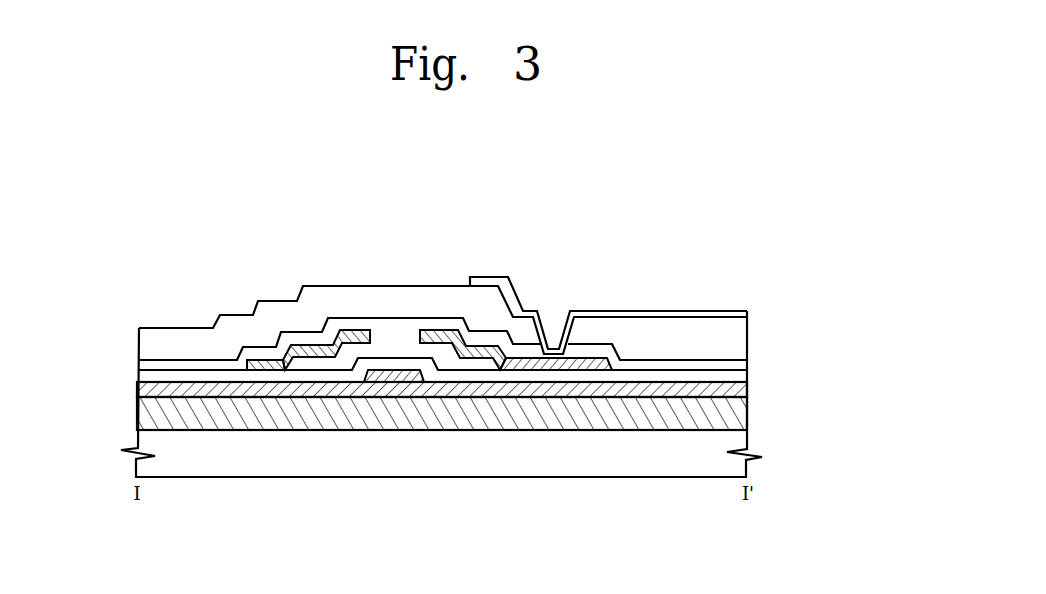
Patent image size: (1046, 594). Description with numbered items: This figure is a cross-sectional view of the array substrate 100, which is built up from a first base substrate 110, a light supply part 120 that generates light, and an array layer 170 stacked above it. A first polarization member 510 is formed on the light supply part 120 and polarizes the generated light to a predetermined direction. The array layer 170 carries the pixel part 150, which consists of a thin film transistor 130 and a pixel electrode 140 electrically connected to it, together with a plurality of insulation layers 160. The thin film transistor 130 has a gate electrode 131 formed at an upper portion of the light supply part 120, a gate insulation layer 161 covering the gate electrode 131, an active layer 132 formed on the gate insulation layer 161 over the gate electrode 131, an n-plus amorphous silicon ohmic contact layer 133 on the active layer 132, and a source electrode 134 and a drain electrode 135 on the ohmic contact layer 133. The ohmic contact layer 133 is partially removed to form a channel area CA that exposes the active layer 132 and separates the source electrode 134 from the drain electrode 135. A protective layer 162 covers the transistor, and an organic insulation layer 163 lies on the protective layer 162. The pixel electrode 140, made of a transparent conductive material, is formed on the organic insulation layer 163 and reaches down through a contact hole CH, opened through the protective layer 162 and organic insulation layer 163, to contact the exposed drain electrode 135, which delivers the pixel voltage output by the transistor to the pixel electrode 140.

The array substrate 100 is at (704, 141).
The first base substrate 110 is at (737, 441).
The light supply part 120 is at (735, 418).
The first polarization member 510 is at (742, 392).
The thin film transistor 130 is at (438, 318).
The gate electrode 131 is at (392, 383).
The active layer 132 is at (456, 366).
The ohmic contact layer 133 is at (318, 358).
The source electrode 134 is at (277, 371).
The drain electrode 135 is at (532, 371).
The pixel electrode 140 is at (519, 290).
The pixel part 150 is at (431, 209).
The insulation layers 160 is at (324, 209).
The gate insulation layer 161 is at (200, 377).
The protective layer 162 is at (244, 344).
The organic insulation layer 163 is at (272, 298).
The array layer 170 is at (236, 168).
The channel area CA is at (404, 335).
The contact hole CH is at (552, 312).